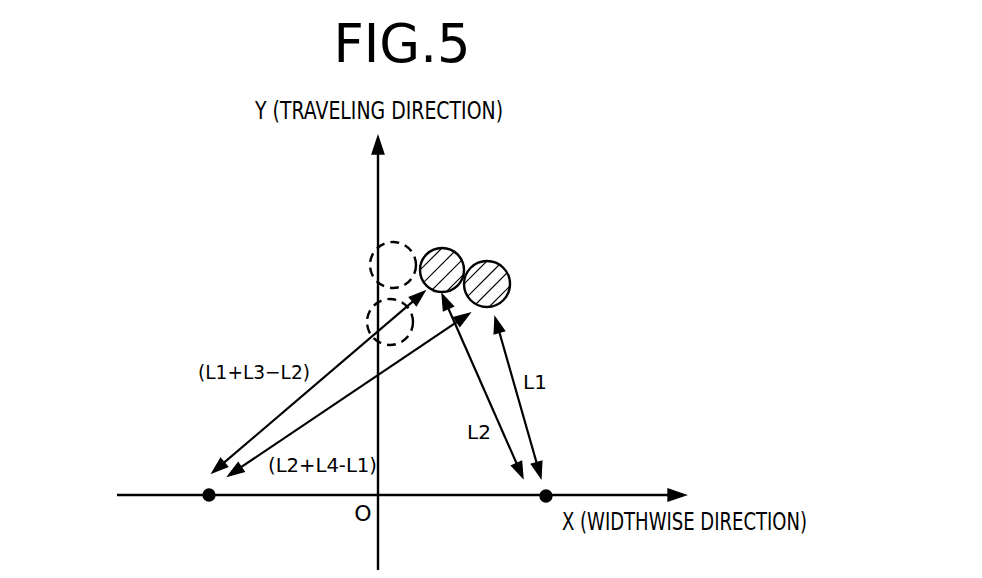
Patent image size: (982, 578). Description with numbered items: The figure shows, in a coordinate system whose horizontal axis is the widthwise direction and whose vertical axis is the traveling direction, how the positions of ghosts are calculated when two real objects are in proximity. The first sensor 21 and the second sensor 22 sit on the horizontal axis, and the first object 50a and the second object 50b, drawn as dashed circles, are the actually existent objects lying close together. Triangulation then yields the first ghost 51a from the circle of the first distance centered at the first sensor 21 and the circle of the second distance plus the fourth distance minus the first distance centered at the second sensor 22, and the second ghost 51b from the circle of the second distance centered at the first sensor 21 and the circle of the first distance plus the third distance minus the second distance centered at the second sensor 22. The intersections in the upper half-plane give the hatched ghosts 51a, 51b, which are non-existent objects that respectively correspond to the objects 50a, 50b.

The first sensor 21 is at (550, 494).
The second sensor 22 is at (205, 491).
The first object 50a is at (367, 321).
The second object 50b is at (370, 264).
The first ghost 51a is at (497, 269).
The second ghost 51b is at (452, 252).